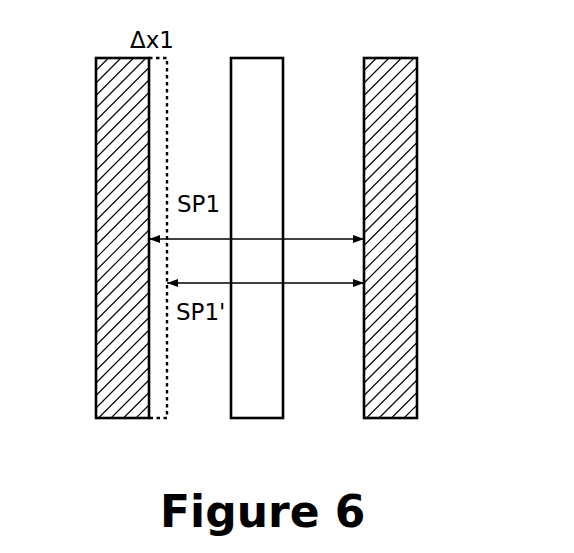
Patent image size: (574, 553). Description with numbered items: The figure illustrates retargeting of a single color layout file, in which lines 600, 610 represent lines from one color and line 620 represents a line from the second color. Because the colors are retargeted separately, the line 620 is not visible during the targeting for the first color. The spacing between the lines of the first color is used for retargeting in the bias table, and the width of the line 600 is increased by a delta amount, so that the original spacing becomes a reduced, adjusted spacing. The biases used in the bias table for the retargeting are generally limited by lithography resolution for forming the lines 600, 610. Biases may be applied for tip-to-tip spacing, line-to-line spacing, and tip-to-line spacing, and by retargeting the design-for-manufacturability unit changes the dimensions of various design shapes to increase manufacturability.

The line 600 is at (96, 118).
The line 610 is at (418, 117).
The line 620 is at (284, 117).